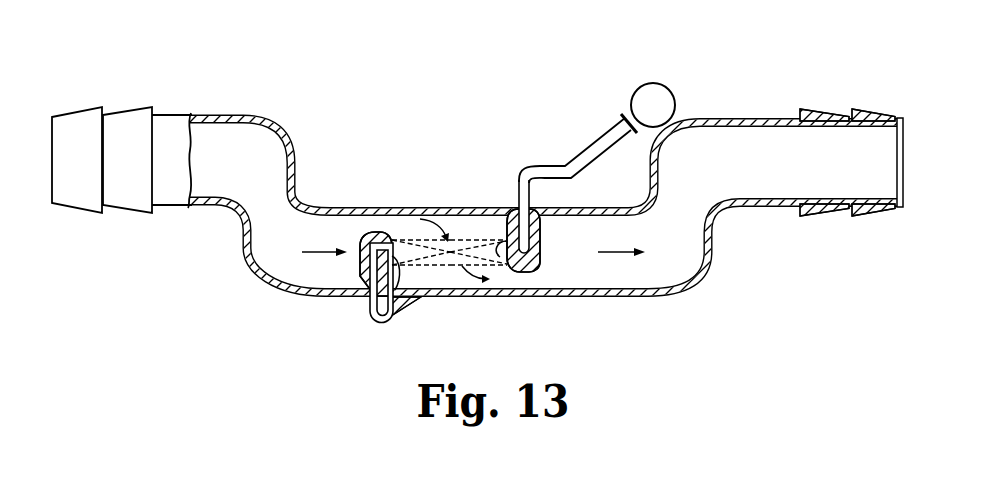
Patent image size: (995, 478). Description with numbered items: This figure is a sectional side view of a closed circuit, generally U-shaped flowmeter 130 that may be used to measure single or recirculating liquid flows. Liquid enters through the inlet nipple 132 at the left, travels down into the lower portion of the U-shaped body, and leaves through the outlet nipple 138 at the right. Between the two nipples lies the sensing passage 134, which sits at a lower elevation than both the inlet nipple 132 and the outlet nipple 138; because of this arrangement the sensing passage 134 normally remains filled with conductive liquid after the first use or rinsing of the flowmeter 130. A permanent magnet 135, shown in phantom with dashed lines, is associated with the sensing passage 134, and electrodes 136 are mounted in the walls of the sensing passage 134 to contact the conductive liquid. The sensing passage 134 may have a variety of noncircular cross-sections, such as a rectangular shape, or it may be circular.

The flowmeter 130 is at (187, 51).
The inlet nipple 132 is at (130, 107).
The sensing passage 134 is at (497, 245).
The permanent magnet 135 is at (410, 238).
The electrodes 136 is at (390, 318).
The outlet nipple 138 is at (828, 116).